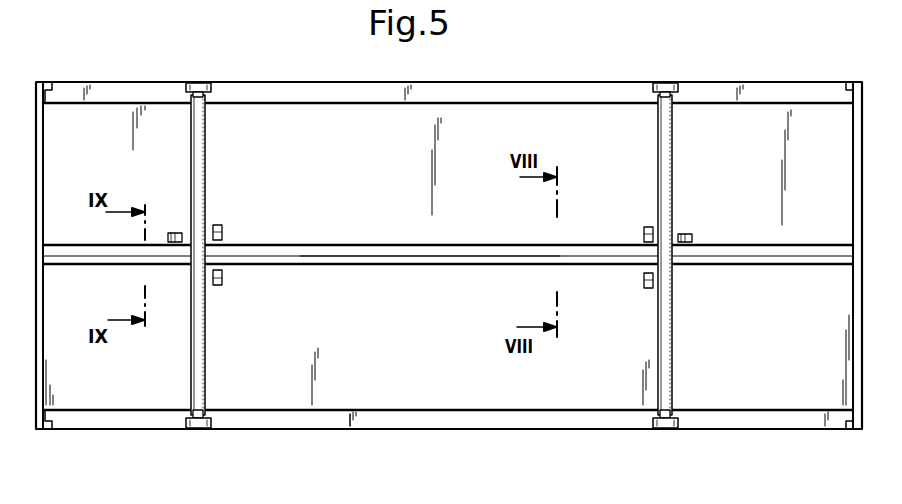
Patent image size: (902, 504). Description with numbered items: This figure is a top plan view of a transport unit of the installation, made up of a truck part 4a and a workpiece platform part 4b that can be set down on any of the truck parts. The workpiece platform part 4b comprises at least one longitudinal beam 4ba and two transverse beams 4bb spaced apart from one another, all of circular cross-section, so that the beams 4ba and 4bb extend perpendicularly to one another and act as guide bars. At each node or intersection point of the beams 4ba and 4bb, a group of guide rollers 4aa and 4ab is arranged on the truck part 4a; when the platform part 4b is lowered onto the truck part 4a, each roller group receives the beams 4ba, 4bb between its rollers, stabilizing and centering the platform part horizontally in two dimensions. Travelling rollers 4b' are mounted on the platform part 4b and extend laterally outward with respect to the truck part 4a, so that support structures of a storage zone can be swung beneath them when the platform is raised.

The truck part 4a is at (455, 431).
The workpiece platform part 4b is at (466, 255).
The travelling rollers 4b' is at (430, 255).
The guide rollers 4aa is at (222, 232).
The guide rollers 4ab is at (172, 232).
The longitudinal beam 4ba is at (420, 266).
The transverse beams 4bb is at (205, 352).